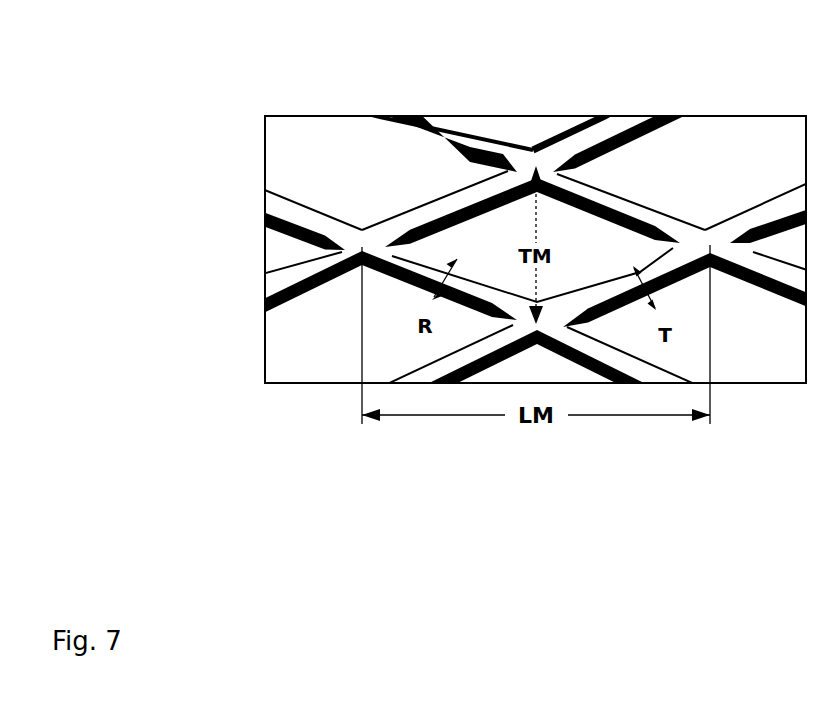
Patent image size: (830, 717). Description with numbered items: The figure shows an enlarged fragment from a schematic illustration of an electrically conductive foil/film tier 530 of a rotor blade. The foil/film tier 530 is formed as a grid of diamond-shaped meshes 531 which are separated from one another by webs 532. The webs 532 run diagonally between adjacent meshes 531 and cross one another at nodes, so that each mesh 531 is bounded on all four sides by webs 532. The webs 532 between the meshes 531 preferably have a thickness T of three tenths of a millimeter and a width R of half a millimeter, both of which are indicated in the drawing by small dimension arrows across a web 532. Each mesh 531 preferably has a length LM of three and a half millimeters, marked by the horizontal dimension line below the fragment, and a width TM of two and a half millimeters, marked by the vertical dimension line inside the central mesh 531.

The electrically conductive foil/film tier 530 is at (311, 98).
The diamond-shaped mesh 531 is at (503, 237).
The web 532 is at (445, 207).